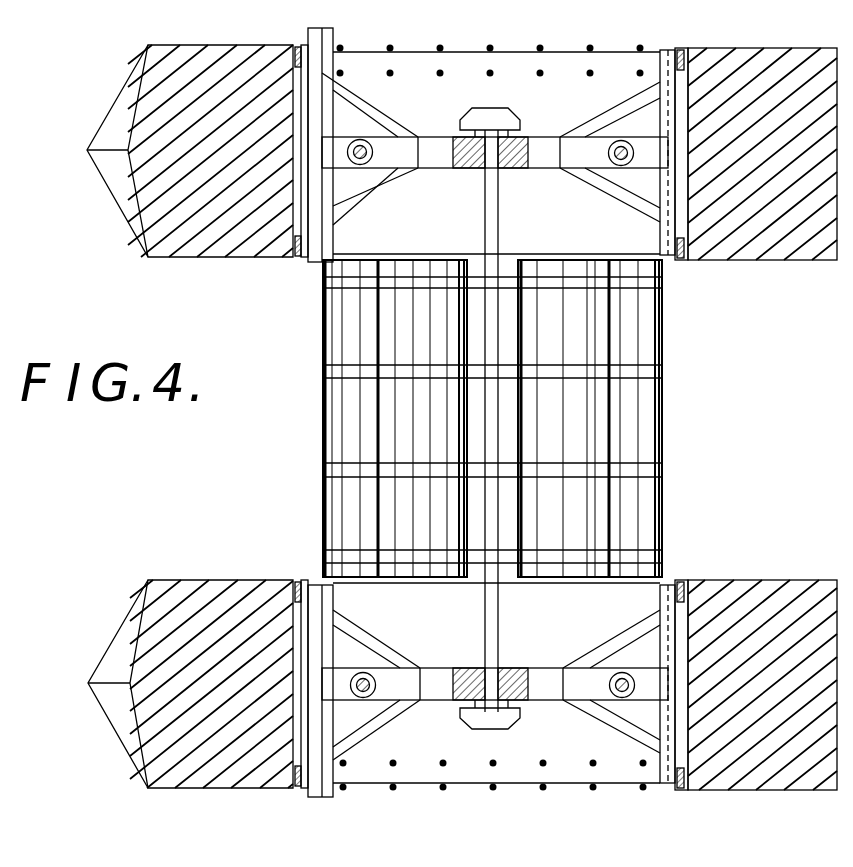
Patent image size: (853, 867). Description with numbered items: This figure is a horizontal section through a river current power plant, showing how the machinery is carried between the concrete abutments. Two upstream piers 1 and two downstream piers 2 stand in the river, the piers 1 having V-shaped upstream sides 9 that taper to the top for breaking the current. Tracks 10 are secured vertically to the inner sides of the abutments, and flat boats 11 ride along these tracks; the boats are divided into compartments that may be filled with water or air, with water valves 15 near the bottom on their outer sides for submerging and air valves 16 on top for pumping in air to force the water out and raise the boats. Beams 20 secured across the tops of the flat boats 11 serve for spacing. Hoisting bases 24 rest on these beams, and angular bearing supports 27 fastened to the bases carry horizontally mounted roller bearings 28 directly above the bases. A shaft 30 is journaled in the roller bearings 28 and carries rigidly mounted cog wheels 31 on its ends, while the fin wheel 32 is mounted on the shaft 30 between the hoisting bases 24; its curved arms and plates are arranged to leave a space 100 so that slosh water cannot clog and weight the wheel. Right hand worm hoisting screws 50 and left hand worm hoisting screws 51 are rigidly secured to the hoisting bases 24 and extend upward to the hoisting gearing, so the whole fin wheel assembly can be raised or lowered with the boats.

The upstream pier 1 is at (200, 240).
The downstream pier 2 is at (780, 253).
The V-shaped upstream side 9 is at (92, 155).
The track 10 is at (680, 260).
The flat boat 11 is at (360, 240).
The water valve 15 is at (492, 48).
The air valve 16 is at (492, 74).
The beam 20 is at (308, 29).
The hoisting base 24 is at (402, 160).
The angular bearing support 27 is at (444, 145).
The roller bearing 28 is at (482, 153).
The shaft 30 is at (510, 500).
The cog wheel 31 is at (507, 117).
The fin wheel 32 is at (643, 442).
The right hand worm hoisting screw 50 is at (360, 148).
The left hand worm hoisting screw 51 is at (363, 688).
The space 100 is at (475, 517).